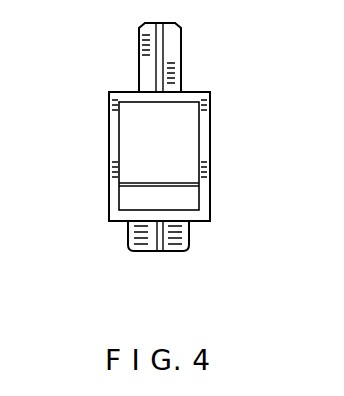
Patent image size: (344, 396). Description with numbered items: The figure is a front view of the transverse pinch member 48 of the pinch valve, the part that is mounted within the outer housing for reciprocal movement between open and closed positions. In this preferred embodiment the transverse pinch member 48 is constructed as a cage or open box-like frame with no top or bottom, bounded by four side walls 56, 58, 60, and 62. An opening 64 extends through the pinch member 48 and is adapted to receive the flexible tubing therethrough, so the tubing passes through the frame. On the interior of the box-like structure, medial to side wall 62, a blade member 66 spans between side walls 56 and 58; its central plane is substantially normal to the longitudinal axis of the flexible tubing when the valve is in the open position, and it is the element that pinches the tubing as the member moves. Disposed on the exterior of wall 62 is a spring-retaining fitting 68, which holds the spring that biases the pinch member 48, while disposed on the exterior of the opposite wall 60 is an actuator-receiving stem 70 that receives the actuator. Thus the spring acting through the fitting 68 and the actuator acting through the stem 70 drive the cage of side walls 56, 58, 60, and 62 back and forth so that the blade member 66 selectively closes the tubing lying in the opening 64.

The transverse pinch member 48 is at (193, 91).
The side wall 56 is at (117, 133).
The side wall 58 is at (207, 163).
The side wall 60 is at (120, 91).
The side wall 62 is at (116, 214).
The opening 64 is at (163, 128).
The blade member 66 is at (187, 196).
The spring-retaining fitting 68 is at (181, 237).
The actuator-receiving stem 70 is at (172, 43).